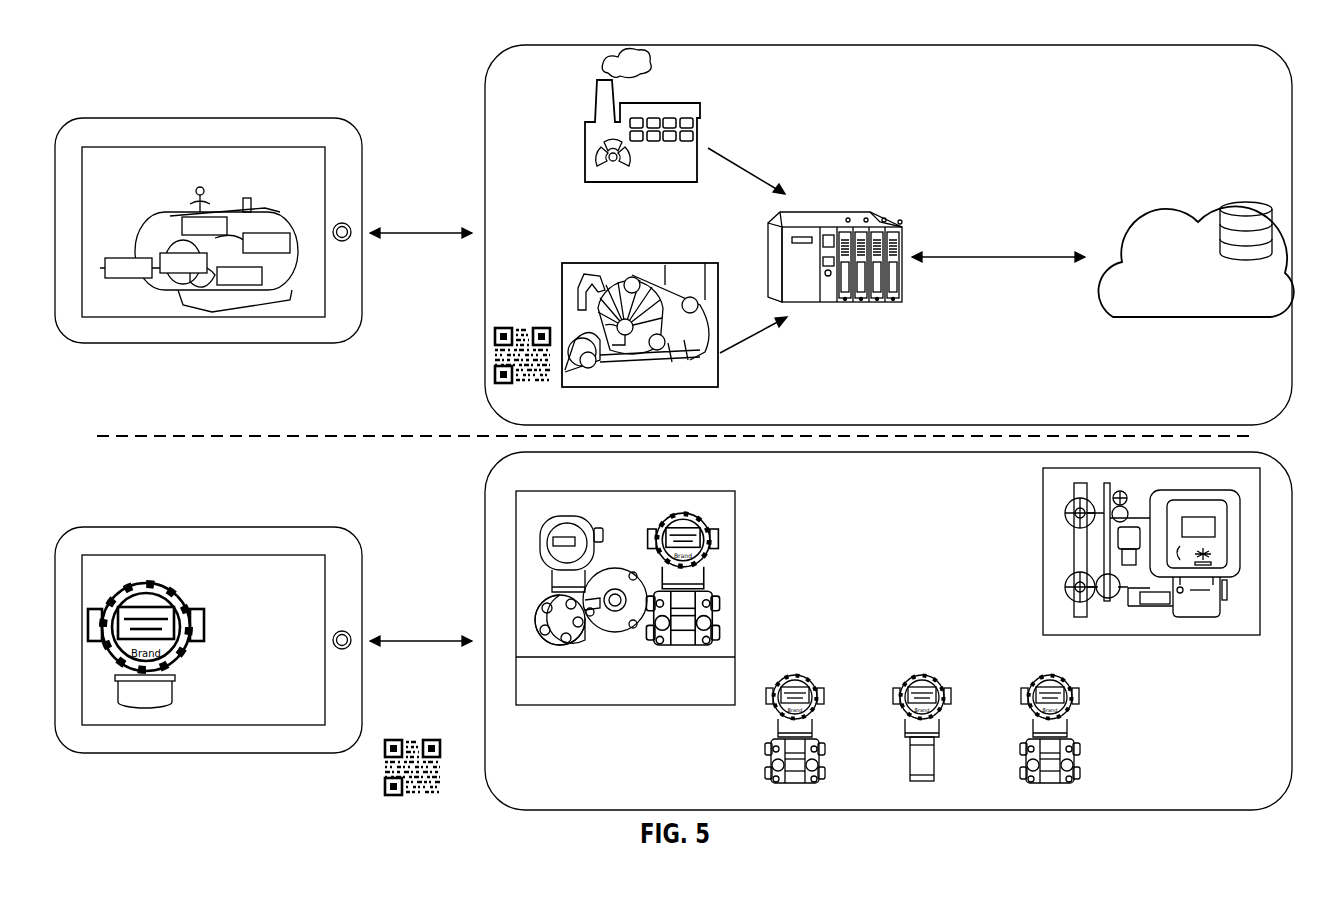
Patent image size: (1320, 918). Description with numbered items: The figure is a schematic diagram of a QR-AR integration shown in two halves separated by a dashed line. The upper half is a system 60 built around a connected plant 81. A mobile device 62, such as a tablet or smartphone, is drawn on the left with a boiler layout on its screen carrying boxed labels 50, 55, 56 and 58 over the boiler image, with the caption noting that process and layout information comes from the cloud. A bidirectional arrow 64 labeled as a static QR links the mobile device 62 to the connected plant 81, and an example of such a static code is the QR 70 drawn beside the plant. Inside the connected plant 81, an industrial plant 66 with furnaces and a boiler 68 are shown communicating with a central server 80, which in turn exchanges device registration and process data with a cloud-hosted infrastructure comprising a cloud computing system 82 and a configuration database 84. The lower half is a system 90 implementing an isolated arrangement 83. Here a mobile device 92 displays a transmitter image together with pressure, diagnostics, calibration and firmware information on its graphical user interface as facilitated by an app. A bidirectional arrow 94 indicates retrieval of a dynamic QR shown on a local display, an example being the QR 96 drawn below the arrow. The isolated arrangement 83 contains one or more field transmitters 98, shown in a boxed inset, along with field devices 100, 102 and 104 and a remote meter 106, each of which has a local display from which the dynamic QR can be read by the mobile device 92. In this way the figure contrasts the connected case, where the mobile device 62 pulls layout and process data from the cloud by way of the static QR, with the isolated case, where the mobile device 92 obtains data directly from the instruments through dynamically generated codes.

The boiler layout label box 50 is at (128, 268).
The boiler layout label box 55 is at (183, 263).
The boiler layout label box 56 is at (204, 226).
The boiler layout label box 58 is at (239, 276).
The system 60 is at (151, 58).
The mobile device 62 is at (287, 133).
The bidirectional arrow 64 is at (423, 237).
The industrial plant 66 is at (585, 157).
The boiler 68 is at (718, 372).
The QR 70 is at (530, 327).
The central server 80 is at (824, 204).
The connected plant 81 is at (1209, 410).
The cloud computing system 82 is at (1120, 317).
The configuration database 84 is at (1230, 205).
The system 90 is at (151, 464).
The mobile device 92 is at (287, 540).
The bidirectional arrow 94 is at (423, 643).
The QR 96 is at (385, 780).
The field transmitters 98 is at (628, 703).
The field device 100 is at (788, 673).
The field device 102 is at (915, 675).
The field device 104 is at (1027, 677).
The remote meter 106 is at (1047, 555).
The isolated arrangement 83 is at (1209, 793).